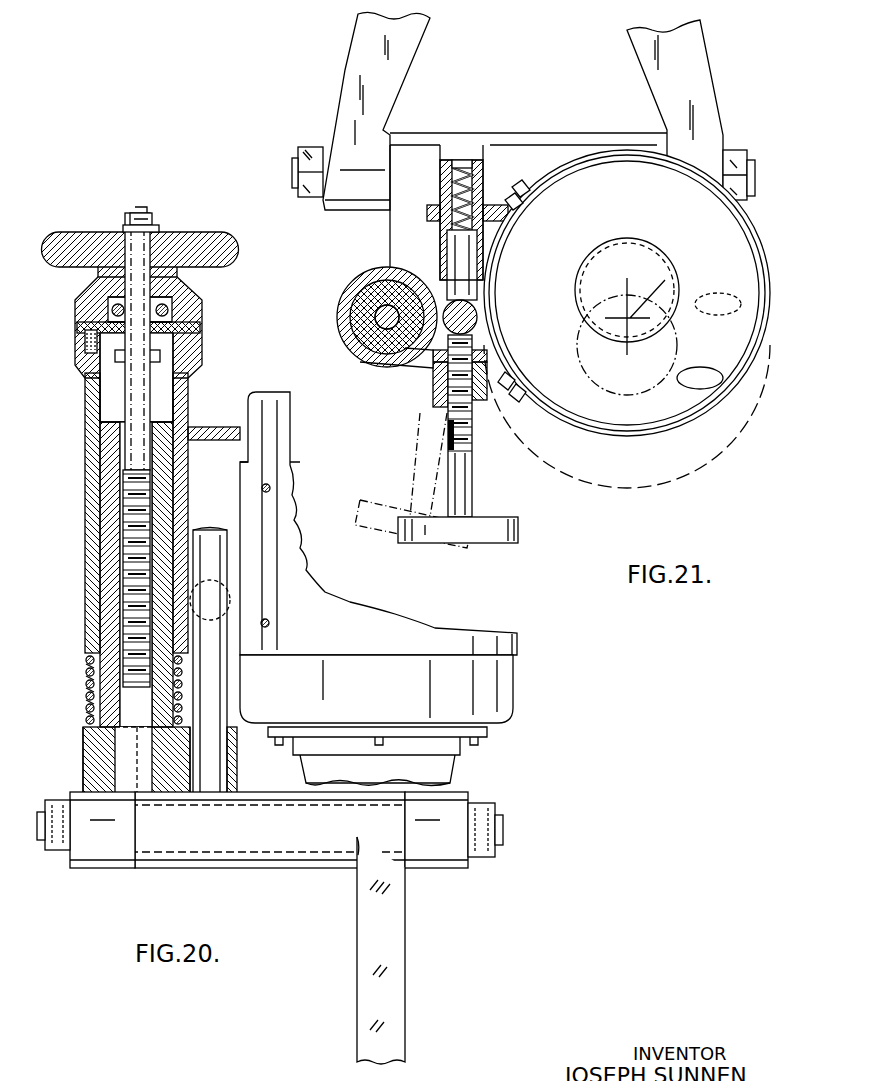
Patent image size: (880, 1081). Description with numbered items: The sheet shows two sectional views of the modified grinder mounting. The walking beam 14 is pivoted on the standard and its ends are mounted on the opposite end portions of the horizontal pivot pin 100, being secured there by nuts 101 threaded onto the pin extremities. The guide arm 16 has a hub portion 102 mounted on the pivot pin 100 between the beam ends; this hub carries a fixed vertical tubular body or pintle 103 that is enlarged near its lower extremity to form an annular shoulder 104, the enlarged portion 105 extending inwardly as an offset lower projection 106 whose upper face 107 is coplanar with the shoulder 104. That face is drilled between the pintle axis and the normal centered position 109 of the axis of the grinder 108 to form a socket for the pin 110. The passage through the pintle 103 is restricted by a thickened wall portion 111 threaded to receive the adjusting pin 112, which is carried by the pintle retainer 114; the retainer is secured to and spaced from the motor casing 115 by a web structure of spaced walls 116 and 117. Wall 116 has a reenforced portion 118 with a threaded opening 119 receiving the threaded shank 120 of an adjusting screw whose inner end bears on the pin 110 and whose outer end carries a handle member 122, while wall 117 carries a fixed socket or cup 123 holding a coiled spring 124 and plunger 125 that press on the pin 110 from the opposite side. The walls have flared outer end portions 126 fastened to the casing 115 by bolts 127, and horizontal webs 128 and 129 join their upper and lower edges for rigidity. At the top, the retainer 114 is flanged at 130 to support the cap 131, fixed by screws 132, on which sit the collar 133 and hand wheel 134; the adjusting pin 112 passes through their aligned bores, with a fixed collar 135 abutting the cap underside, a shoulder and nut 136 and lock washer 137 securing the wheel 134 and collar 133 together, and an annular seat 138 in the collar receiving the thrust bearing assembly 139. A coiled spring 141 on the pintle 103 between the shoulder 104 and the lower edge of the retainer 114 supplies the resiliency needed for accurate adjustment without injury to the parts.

In FIG. 20, the walking beam 14 is at (105, 870).
In FIG. 21, the walking beam 14 is at (360, 72).
In FIG. 20, the guide arm 16 is at (406, 938).
In FIG. 20, the horizontal pivot pin 100 is at (503, 830).
In FIG. 21, the horizontal pivot pin 100 is at (757, 172).
In FIG. 20, the nuts 101 is at (55, 853).
In FIG. 21, the nuts 101 is at (312, 150).
In FIG. 20, the hub portion 102 is at (275, 870).
In FIG. 20, the tubular body or pintle 103 is at (85, 680).
In FIG. 20, the annular shoulder 104 is at (85, 738).
In FIG. 20, the enlarged portion 105 is at (85, 768).
In FIG. 21, the enlarged portion 105 is at (392, 255).
In FIG. 20, the offset lower projection 106 is at (233, 763).
In FIG. 20, the upper face 107 is at (242, 722).
In FIG. 21, the grinder 108 is at (686, 302).
In FIG. 21, the normal centered position of the grinder axis 109 is at (665, 280).
In FIG. 20, the pin 110 is at (205, 540).
In FIG. 21, the pin 110 is at (478, 306).
In FIG. 20, the thickened wall portion 111 is at (125, 592).
In FIG. 21, the thickened wall portion 111 is at (358, 320).
In FIG. 20, the adjusting pin 112 is at (140, 402).
In FIG. 21, the adjusting pin 112 is at (385, 312).
In FIG. 20, the pintle retainer 114 is at (95, 410).
In FIG. 21, the pintle retainer 114 is at (356, 364).
In FIG. 20, the motor casing 115 is at (325, 625).
In FIG. 21, the motor casing 115 is at (748, 253).
In FIG. 21, the wall 116 is at (440, 380).
In FIG. 21, the wall 117 is at (447, 215).
In FIG. 21, the reenforced portion 118 is at (448, 408).
In FIG. 21, the threaded opening 119 is at (452, 425).
In FIG. 21, the threaded shank 120 is at (482, 347).
In FIG. 21, the handle member 122 is at (506, 546).
In FIG. 20, the socket or cup 123 is at (270, 628).
In FIG. 21, the socket or cup 123 is at (445, 178).
In FIG. 21, the coiled spring 124 is at (478, 180).
In FIG. 21, the plunger 125 is at (465, 260).
In FIG. 21, the flared outer end portions 126 is at (528, 202).
In FIG. 21, the bolts 127 is at (530, 188).
In FIG. 20, the horizontal web 128 is at (222, 432).
In FIG. 20, the horizontal web 129 is at (185, 662).
In FIG. 20, the flange 130 is at (202, 356).
In FIG. 20, the cap 131 is at (200, 330).
In FIG. 20, the screws 132 is at (78, 348).
In FIG. 20, the collar 133 is at (80, 306).
In FIG. 20, the hand wheel 134 is at (207, 235).
In FIG. 20, the shoulder or fixed collar 135 is at (124, 356).
In FIG. 20, the shoulder / nut 136 is at (150, 210).
In FIG. 20, the lock washer 137 is at (124, 229).
In FIG. 20, the annular seat 138 is at (168, 298).
In FIG. 20, the thrust bearing assembly 139 is at (175, 312).
In FIG. 20, the coiled spring 141 is at (85, 700).